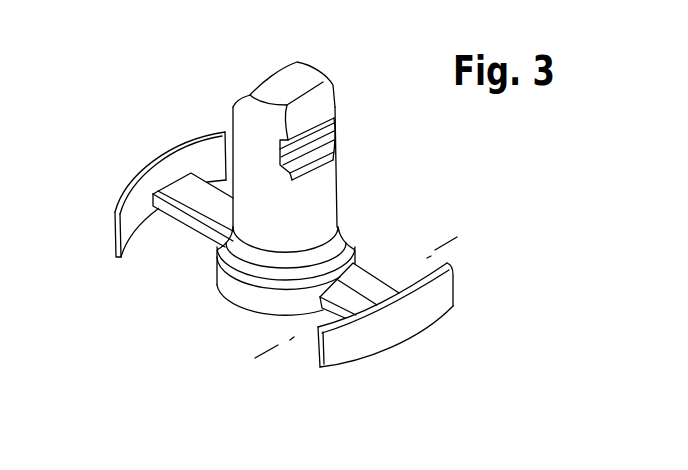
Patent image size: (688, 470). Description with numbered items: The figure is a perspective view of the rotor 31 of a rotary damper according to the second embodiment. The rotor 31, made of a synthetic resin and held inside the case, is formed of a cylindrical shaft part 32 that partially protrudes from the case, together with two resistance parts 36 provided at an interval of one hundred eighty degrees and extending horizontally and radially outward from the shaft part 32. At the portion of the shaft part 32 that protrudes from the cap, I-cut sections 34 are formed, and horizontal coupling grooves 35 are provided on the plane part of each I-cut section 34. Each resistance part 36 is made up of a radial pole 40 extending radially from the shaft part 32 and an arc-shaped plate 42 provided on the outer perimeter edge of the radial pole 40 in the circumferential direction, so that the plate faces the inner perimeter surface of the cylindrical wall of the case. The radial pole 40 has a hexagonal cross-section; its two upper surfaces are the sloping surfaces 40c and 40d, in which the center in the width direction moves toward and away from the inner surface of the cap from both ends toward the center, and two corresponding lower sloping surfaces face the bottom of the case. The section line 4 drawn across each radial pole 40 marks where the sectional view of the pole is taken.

The rotor 31 is at (200, 307).
The shaft part 32 is at (282, 88).
The I-cut sections 34 is at (327, 158).
The horizontal coupling grooves 35 is at (323, 130).
The resistance parts 36 is at (257, 317).
The radial pole 40 is at (195, 222).
The sloping surface 40c is at (193, 179).
The sloping surface 40d is at (156, 180).
The arc-shaped plate 42 is at (150, 179).
The section line 4 is at (270, 352).